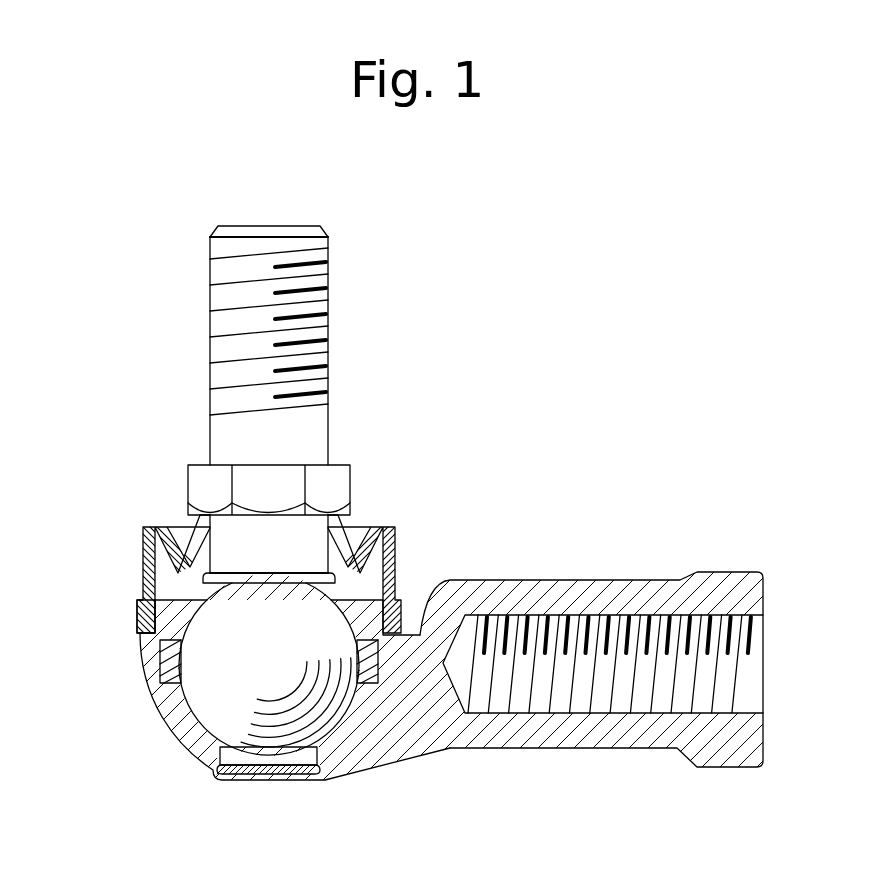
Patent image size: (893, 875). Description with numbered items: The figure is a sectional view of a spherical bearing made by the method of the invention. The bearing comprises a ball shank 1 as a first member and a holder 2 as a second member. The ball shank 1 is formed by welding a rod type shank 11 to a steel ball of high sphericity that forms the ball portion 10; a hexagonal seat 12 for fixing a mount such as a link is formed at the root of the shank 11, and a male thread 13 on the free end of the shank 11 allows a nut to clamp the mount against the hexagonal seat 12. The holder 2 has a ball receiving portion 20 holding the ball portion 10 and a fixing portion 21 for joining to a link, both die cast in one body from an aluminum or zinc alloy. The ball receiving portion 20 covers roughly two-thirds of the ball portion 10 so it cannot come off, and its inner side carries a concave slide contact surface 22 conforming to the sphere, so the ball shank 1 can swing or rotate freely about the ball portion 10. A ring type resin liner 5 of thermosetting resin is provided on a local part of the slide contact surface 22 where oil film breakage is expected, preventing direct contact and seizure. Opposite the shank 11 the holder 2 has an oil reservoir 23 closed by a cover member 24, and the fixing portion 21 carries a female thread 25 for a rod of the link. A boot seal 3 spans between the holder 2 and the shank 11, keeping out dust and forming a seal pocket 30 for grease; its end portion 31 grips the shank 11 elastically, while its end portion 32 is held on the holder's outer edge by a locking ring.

The ball shank 1 is at (274, 375).
The holder 2 is at (446, 437).
The boot seal 3 is at (274, 563).
The resin liner 5 is at (160, 652).
The ball portion 10 is at (338, 717).
The shank 11 is at (292, 226).
The hexagonal seat 12 is at (205, 480).
The male thread 13 is at (223, 297).
The ball receiving portion 20 is at (185, 742).
The fixing portion 21 is at (598, 733).
The slide contact surface 22 is at (205, 698).
The oil reservoir 23 is at (292, 760).
The cover member 24 is at (240, 778).
The female thread 25 is at (663, 697).
The seal pocket 30 is at (163, 582).
The end portion 31 is at (349, 523).
The end portion 32 is at (142, 612).